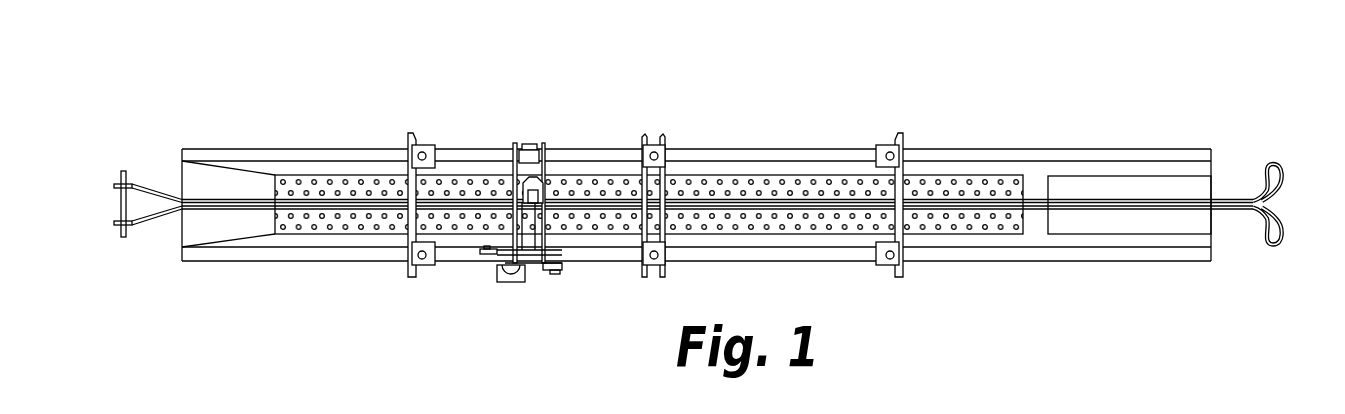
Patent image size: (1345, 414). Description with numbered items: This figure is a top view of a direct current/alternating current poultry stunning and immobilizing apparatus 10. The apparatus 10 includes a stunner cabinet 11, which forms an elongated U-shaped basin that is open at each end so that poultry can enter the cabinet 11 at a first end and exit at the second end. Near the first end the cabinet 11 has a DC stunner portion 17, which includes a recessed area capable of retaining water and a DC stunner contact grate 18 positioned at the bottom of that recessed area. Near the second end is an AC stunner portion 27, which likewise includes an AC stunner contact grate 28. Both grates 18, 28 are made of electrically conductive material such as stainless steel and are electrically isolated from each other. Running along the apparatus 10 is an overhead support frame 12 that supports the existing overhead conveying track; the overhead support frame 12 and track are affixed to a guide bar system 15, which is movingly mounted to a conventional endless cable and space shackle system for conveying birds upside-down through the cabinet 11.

The poultry stunning and immobilizing apparatus 10 is at (1026, 71).
The stunner cabinet 11 is at (1084, 285).
The overhead support frame 12 is at (798, 126).
The guide bar system 15 is at (1268, 211).
The DC stunner portion 17 is at (413, 92).
The DC stunner contact grate 18 is at (467, 240).
The AC stunner portion 27 is at (1184, 118).
The AC stunner contact grate 28 is at (1110, 168).